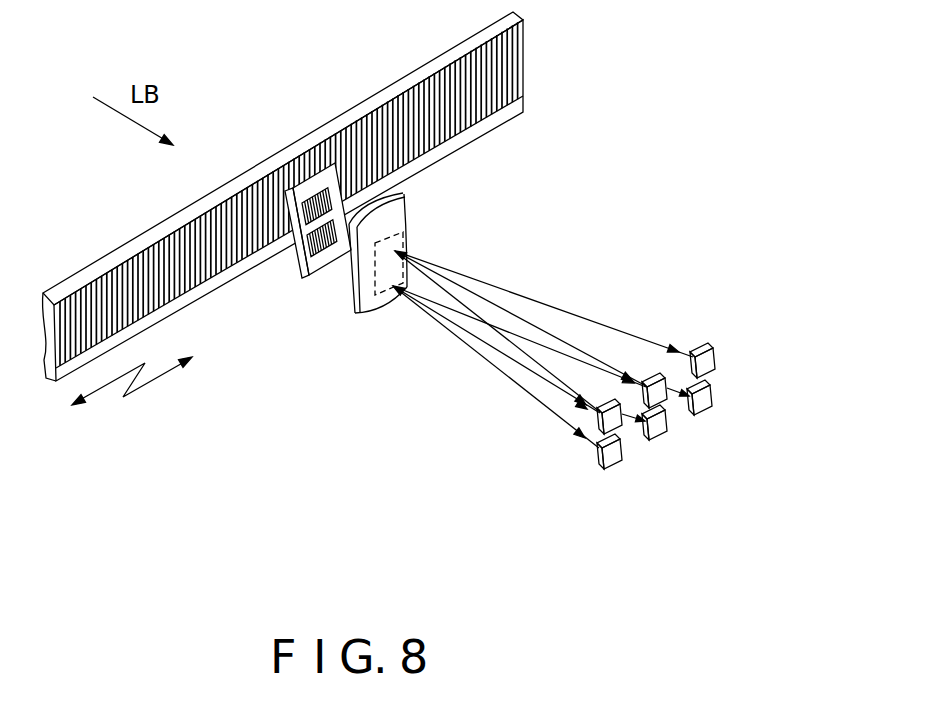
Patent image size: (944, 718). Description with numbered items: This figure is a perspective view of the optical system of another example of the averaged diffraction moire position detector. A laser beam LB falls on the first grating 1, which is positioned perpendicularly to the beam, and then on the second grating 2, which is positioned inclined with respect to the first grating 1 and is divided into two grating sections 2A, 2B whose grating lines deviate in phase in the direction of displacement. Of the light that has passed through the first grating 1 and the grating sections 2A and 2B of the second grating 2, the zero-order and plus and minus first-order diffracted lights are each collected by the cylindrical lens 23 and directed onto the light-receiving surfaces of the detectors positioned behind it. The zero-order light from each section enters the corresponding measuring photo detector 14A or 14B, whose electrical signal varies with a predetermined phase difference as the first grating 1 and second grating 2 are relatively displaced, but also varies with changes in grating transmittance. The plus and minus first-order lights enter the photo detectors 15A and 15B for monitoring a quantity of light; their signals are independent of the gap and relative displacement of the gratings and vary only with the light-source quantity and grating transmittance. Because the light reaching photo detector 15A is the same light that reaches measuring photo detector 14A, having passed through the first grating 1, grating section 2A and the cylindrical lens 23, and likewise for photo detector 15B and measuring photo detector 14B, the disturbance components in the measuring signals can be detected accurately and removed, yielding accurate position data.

The first grating 1 is at (523, 66).
The second grating 2 is at (291, 258).
The grating section 2A is at (274, 244).
The grating section 2B is at (298, 268).
The cylindrical lens 23 is at (408, 198).
The measuring photo detector 14A is at (690, 412).
The measuring photo detector 14B is at (658, 434).
The photo detector for monitoring a quantity of light 15A is at (718, 353).
The photo detector for monitoring a quantity of light 15B is at (713, 393).